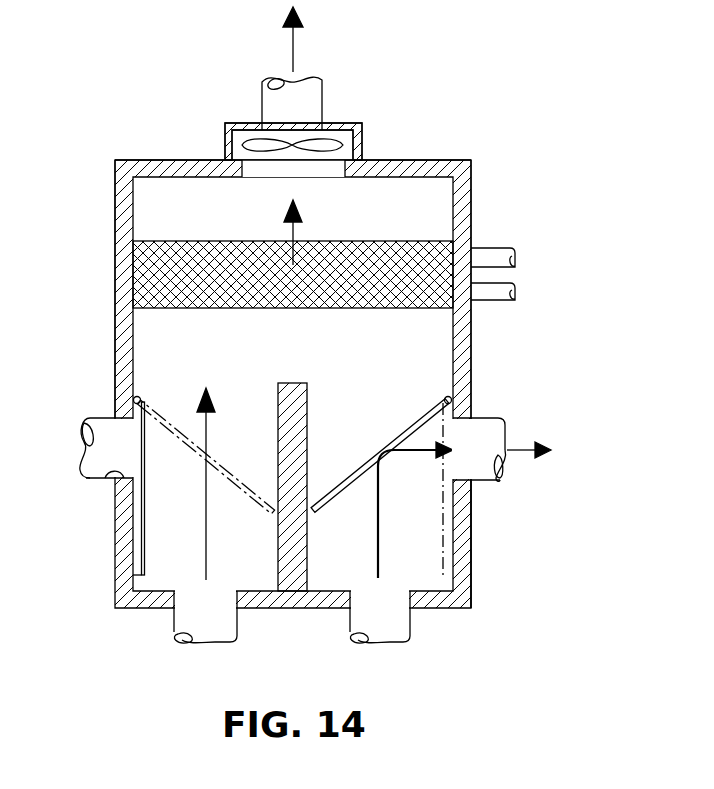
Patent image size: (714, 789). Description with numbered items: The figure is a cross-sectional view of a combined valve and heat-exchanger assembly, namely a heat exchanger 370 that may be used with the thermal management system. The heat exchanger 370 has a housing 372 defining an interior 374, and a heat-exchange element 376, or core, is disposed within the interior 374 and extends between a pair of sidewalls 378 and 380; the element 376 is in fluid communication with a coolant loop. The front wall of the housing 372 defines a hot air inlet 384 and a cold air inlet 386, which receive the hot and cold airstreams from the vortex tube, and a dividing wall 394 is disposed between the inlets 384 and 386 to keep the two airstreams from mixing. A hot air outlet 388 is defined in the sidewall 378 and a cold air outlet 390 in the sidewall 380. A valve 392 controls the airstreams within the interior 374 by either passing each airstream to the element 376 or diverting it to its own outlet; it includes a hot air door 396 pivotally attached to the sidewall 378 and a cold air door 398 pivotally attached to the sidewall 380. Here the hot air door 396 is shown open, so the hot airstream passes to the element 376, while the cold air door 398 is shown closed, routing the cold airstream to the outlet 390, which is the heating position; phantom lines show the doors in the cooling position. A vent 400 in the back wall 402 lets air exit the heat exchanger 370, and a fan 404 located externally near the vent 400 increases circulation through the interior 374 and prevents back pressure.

The heat exchanger 370 is at (492, 118).
The housing 372 is at (467, 353).
The interior 374 is at (166, 342).
The heat-exchange element 376 is at (360, 241).
The sidewall 378 is at (115, 265).
The sidewall 380 is at (466, 368).
The hot air inlet 384 is at (235, 600).
The cold air inlet 386 is at (355, 600).
The hot air outlet 388 is at (110, 479).
The cold air outlet 390 is at (470, 452).
The valve 392 is at (352, 424).
The dividing wall 394 is at (290, 383).
The hot air door 396 is at (140, 503).
The cold air door 398 is at (318, 513).
The vent 400 is at (257, 192).
The back wall 402 is at (208, 163).
The fan 404 is at (346, 125).